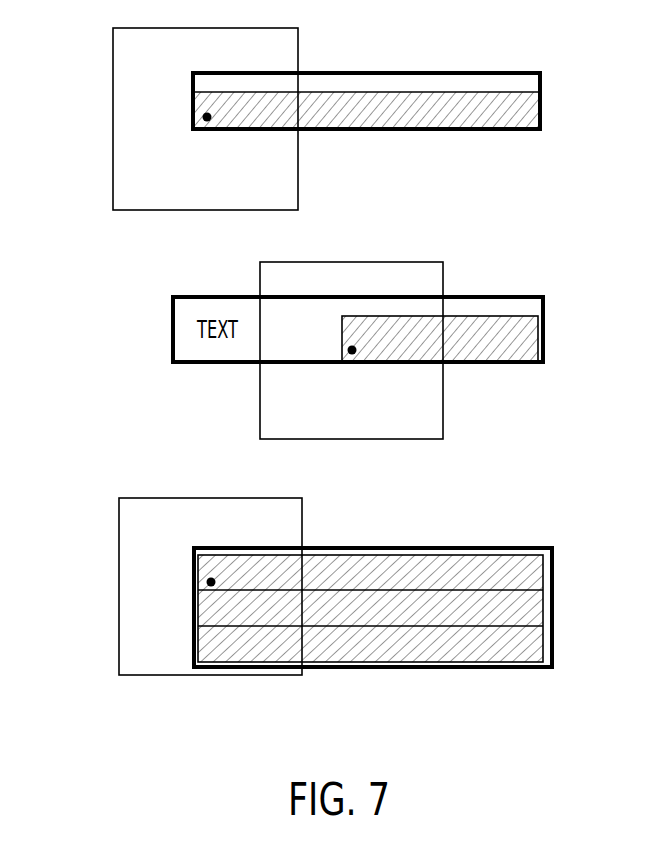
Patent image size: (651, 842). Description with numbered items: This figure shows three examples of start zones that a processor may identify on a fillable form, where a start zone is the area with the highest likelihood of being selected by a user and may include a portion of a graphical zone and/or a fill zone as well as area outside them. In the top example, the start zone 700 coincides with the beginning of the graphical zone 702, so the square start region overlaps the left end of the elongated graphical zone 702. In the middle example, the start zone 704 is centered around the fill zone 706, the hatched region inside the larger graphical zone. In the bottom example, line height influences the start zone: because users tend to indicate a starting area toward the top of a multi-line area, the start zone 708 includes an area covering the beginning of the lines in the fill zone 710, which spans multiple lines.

The start zone 700 is at (113, 78).
The graphical zone 702 is at (332, 73).
The start zone 704 is at (443, 283).
The fill zone 706 is at (523, 343).
The start zone 708 is at (119, 542).
The fill zone 710 is at (390, 669).